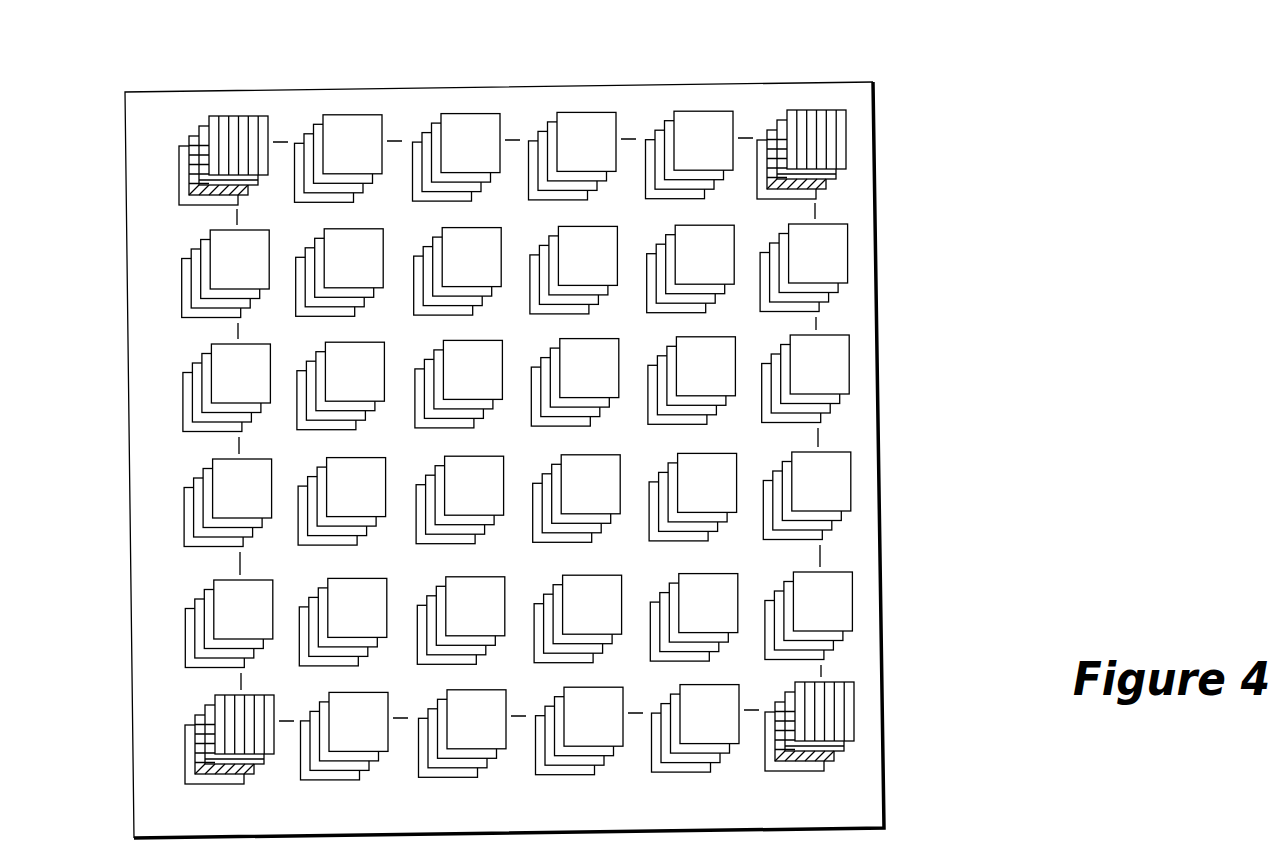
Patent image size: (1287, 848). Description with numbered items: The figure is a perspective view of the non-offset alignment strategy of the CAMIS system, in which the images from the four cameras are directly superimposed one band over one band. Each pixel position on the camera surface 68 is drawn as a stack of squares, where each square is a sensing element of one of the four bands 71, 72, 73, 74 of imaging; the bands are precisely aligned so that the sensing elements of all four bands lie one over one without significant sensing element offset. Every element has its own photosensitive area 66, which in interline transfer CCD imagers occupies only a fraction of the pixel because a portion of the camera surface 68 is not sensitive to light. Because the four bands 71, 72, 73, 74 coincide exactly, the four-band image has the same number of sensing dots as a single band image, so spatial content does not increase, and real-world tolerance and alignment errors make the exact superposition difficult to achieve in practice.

The photosensitive area 66 is at (541, 428).
The camera surface 68 is at (855, 197).
The first band of imaging 71 is at (236, 117).
The second band of imaging 72 is at (202, 132).
The third band of imaging 73 is at (180, 167).
The fourth band of imaging 74 is at (180, 203).